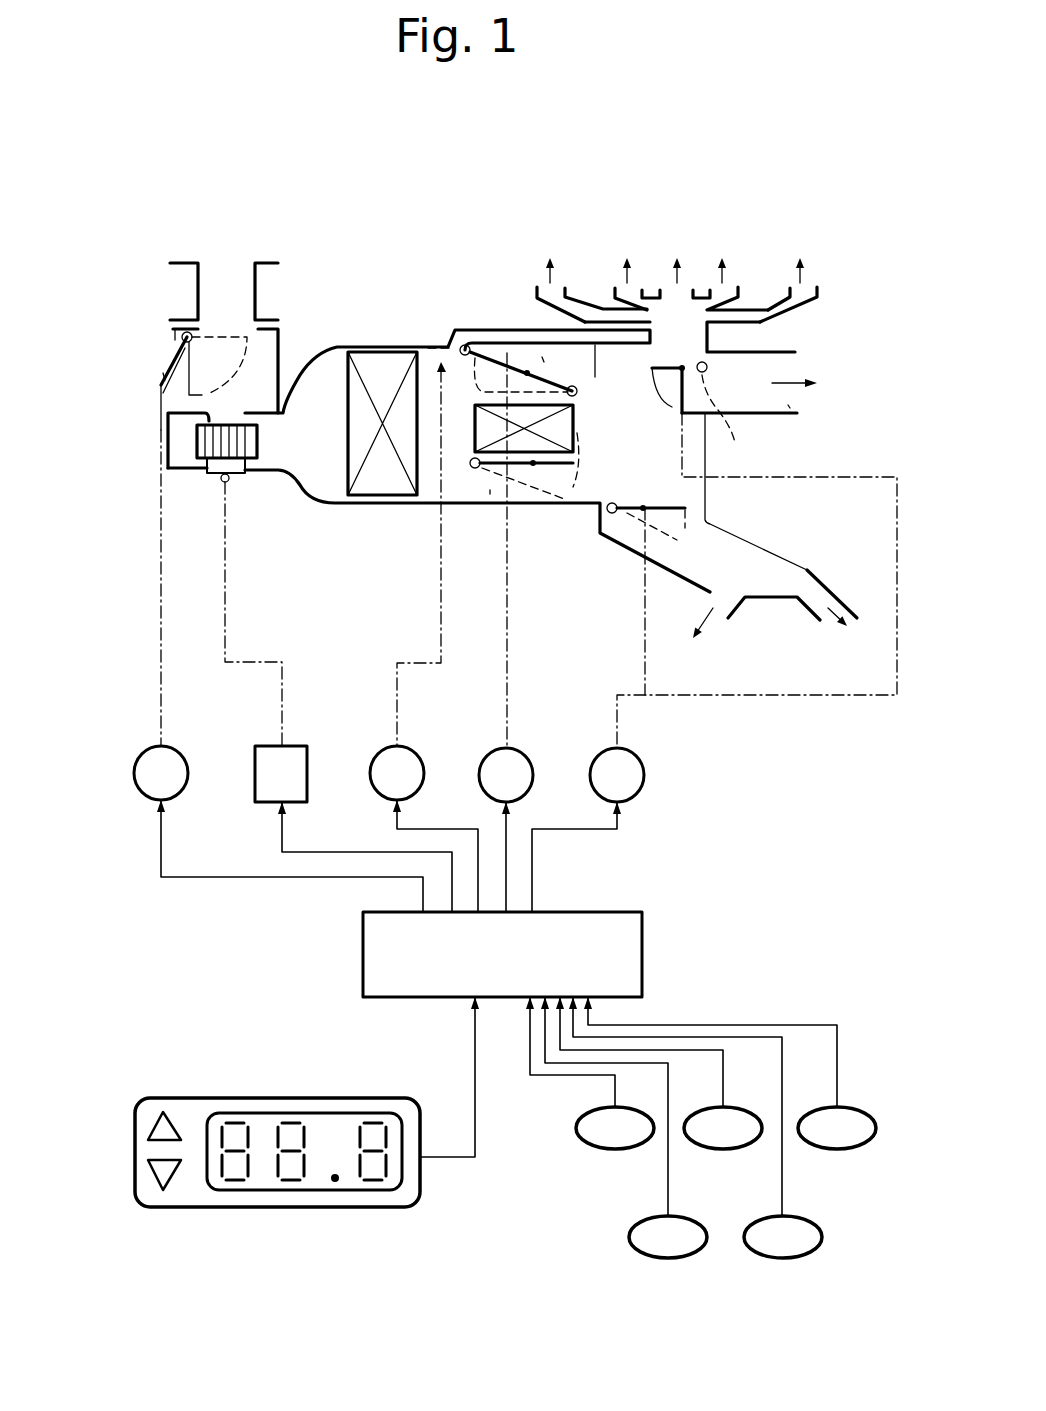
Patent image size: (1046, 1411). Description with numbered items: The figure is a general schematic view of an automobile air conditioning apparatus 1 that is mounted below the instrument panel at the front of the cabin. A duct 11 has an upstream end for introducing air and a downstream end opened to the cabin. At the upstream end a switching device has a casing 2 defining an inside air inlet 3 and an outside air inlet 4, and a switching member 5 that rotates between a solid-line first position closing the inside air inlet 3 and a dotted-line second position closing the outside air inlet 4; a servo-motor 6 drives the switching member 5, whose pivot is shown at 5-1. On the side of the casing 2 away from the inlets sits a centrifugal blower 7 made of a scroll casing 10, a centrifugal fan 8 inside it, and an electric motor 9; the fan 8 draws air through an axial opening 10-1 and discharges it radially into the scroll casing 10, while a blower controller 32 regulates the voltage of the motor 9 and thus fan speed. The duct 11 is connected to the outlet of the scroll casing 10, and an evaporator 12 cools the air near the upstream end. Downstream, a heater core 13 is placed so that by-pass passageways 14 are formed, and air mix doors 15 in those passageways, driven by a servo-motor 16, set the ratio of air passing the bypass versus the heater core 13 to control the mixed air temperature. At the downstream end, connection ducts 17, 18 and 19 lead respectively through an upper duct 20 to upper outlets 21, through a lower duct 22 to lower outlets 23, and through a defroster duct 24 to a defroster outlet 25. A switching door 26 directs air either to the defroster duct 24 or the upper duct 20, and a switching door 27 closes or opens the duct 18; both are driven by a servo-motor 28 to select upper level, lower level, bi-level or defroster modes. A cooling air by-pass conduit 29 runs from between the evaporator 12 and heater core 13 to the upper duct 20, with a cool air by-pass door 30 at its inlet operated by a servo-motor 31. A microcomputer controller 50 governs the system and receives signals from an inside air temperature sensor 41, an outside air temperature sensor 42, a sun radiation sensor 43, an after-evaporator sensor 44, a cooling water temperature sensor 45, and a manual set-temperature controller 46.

The air conditioning apparatus 1 is at (375, 300).
The casing 2 is at (175, 331).
The inside air inlet 3 is at (163, 373).
The outside air inlet 4 is at (226, 277).
The switching member 5 is at (180, 358).
The door pivot shaft 5-1 is at (181, 341).
The servo-motor 6 is at (137, 797).
The centrifugal blower 7 is at (177, 483).
The centrifugal fan 8 is at (197, 447).
The electric motor 9 is at (248, 473).
The scroll casing 10 is at (190, 473).
The axial opening 10-1 is at (178, 408).
The duct 11 is at (490, 490).
The evaporator 12 is at (382, 487).
The heater core 13 is at (578, 432).
The by-pass passageways 14 is at (540, 357).
The air mix doors 15 is at (527, 373).
The servo-motor 16 is at (487, 795).
The connection duct 17 is at (688, 350).
The connection duct 18 is at (695, 522).
The connection duct 19 is at (712, 422).
The upper duct 20 is at (712, 343).
The upper outlets 21 is at (558, 288).
The lower duct 22 is at (808, 570).
The lower outlets 23 is at (690, 638).
The defroster duct 24 is at (755, 418).
The defroster outlet 25 is at (788, 405).
The switching door 26 is at (703, 383).
The switching door 27 is at (615, 512).
The servo-motor 28 is at (597, 796).
The cooling air by-pass conduit 29 is at (466, 343).
The cool air by-pass door 30 is at (446, 348).
The servo-motor 31 is at (378, 798).
The blower controller 32 is at (308, 745).
The inside air temperature sensor 41 is at (583, 1145).
The outside air temperature sensor 42 is at (640, 1256).
The sun radiation sensor 43 is at (695, 1146).
The after-evaporator sensor 44 is at (752, 1256).
The cooling water temperature sensor 45 is at (812, 1146).
The controller 46 is at (387, 1208).
The controller 50 is at (642, 935).